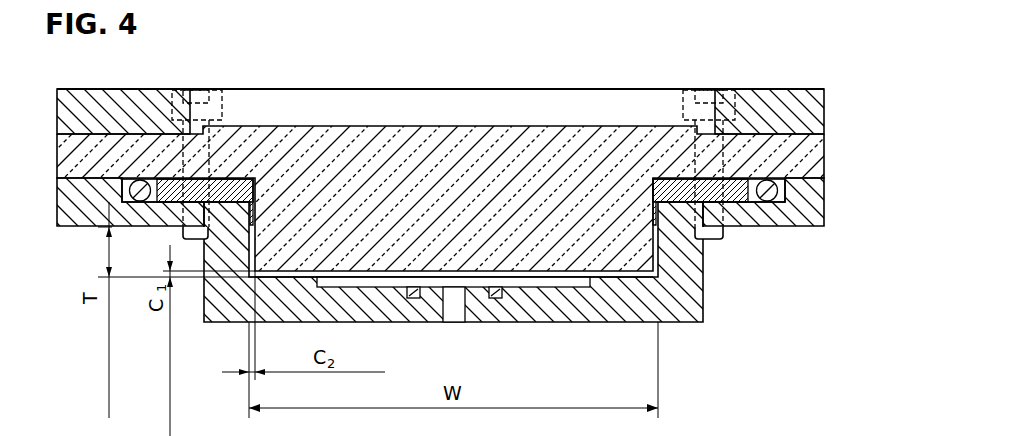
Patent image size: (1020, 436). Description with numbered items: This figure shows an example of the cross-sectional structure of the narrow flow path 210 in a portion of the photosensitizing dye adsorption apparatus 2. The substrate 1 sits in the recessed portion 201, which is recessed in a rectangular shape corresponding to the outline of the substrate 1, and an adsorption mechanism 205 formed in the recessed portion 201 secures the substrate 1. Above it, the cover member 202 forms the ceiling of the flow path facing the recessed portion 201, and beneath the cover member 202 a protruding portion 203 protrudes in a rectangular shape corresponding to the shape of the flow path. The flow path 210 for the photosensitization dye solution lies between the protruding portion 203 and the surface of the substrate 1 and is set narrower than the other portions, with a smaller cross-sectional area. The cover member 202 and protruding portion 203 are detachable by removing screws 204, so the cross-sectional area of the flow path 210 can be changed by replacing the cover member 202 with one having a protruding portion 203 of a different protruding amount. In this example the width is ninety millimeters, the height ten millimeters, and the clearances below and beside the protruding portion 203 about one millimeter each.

The substrate 1 is at (606, 306).
The substrate holding apparatus 2 is at (716, 347).
The recessed portion 201 is at (428, 291).
The cover member 202 is at (598, 128).
The protruding portion 203 is at (640, 252).
The screws 204 is at (196, 89).
The adsorption mechanism 205 is at (463, 303).
The flow path (narrow path) 210 is at (545, 272).